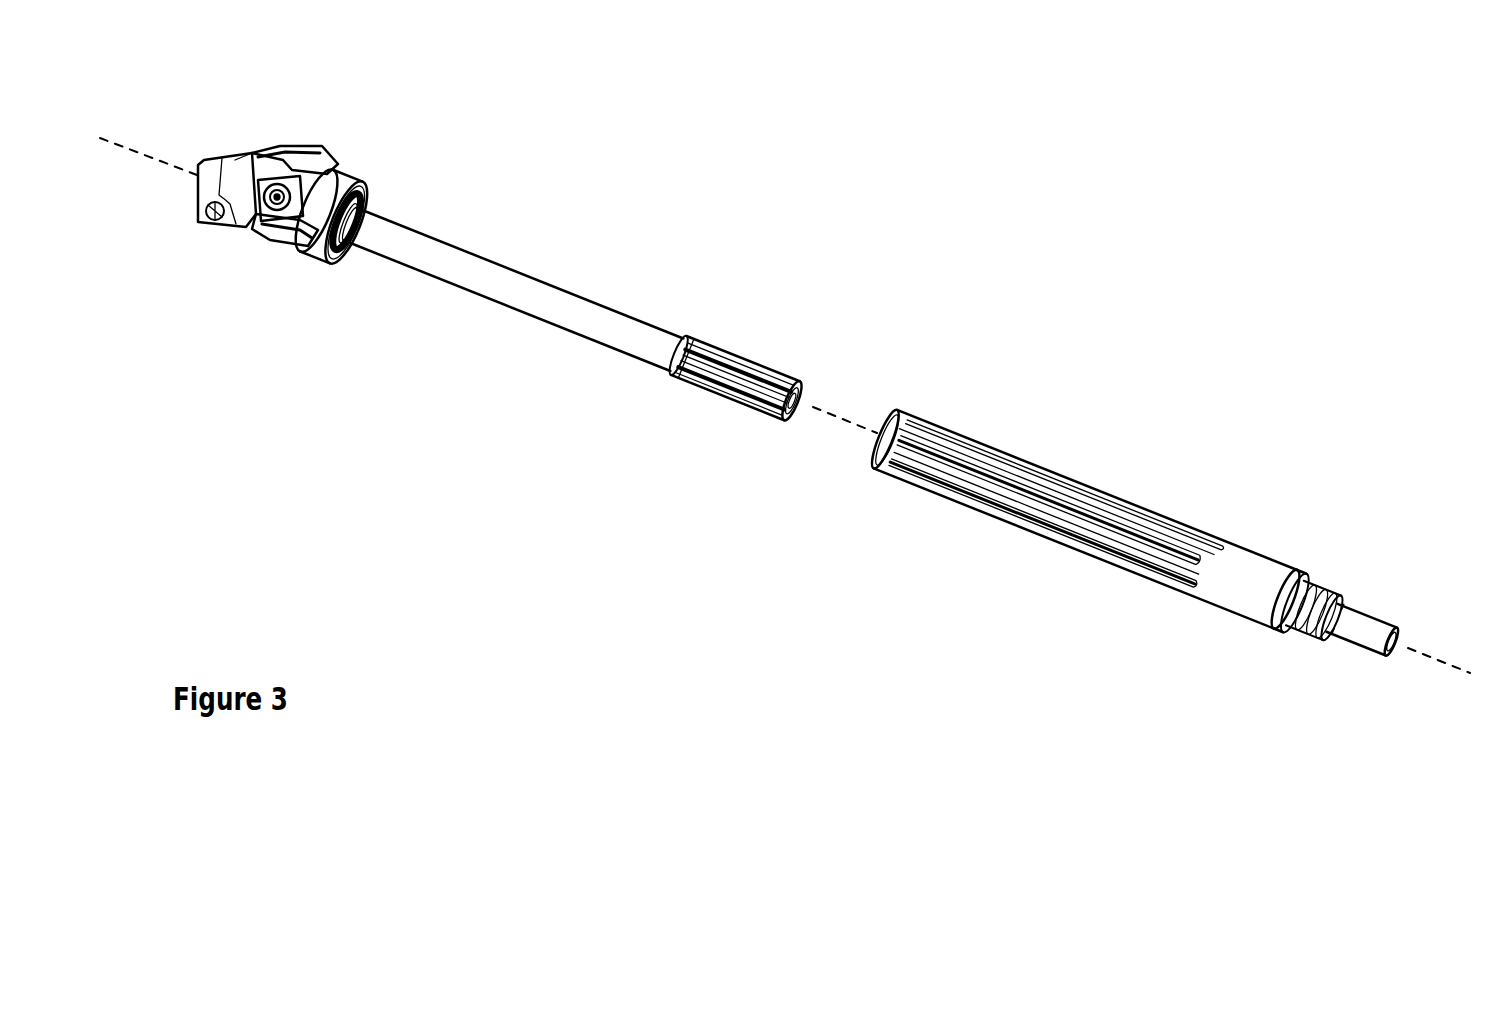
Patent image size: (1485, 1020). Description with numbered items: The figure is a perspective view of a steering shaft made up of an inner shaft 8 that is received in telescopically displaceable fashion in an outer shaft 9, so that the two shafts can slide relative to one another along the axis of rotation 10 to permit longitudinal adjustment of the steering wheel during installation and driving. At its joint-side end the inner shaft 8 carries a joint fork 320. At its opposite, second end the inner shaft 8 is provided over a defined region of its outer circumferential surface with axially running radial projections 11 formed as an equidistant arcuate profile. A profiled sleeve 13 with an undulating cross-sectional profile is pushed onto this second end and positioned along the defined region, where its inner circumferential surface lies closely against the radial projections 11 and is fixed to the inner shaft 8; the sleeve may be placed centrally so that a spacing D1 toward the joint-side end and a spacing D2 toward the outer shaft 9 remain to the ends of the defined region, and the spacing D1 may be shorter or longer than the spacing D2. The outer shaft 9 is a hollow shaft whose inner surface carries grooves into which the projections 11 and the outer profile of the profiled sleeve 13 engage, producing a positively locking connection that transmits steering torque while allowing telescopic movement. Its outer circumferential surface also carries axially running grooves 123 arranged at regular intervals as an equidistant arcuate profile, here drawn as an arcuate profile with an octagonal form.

The joint fork 320 is at (328, 168).
The inner shaft 8 is at (498, 288).
The profiled sleeve 13 is at (731, 340).
The radial projections 11 is at (802, 415).
The axis of rotation 10 is at (845, 418).
The outer shaft 9 is at (1248, 565).
The axially running grooves 123 is at (937, 458).
The spacing D1 is at (690, 383).
The spacing D2 is at (785, 420).